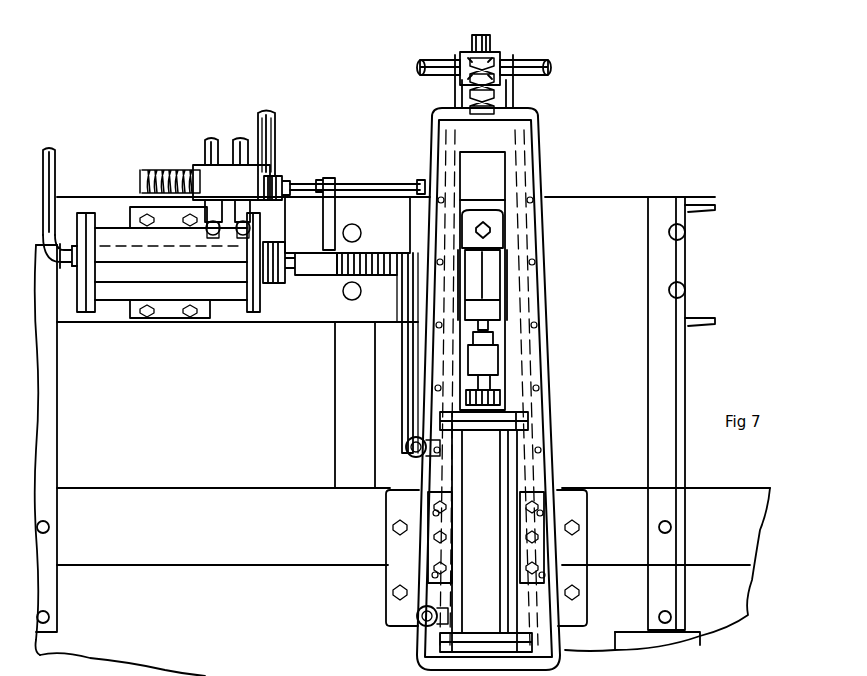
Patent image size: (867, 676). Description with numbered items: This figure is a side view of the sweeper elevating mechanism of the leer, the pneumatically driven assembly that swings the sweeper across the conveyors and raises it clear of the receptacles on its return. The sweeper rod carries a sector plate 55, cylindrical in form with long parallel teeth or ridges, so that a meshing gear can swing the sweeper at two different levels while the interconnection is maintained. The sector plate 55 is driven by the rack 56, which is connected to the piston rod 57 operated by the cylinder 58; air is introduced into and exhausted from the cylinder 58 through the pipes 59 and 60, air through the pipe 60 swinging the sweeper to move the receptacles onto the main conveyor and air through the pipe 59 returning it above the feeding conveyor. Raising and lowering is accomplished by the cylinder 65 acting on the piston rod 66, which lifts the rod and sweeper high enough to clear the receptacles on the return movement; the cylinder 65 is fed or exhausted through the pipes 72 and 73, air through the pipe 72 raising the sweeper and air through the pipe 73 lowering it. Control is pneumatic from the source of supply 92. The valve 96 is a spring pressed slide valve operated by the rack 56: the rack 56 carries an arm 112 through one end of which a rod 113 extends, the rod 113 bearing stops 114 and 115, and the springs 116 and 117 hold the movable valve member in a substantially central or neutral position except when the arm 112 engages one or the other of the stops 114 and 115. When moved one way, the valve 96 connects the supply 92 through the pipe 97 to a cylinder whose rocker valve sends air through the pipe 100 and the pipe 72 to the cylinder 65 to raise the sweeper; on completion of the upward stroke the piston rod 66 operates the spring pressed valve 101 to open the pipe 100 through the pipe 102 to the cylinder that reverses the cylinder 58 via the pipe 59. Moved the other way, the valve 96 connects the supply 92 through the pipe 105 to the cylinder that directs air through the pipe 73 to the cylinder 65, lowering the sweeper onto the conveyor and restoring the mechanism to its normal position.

The sector plate 55 is at (404, 388).
The rack 56 is at (376, 276).
The piston rod 57 is at (291, 282).
The cylinder 58 is at (223, 292).
The pipe 59 is at (51, 185).
The pipe 60 is at (273, 150).
The cylinder 65 is at (500, 492).
The piston rod 66 is at (494, 384).
The pipe 72 is at (418, 625).
The pipe 73 is at (408, 455).
The source of supply of air 92 is at (240, 226).
The valve 96 is at (240, 163).
The pipe 97 is at (210, 138).
The pipe 100 is at (434, 77).
The valve 101 is at (496, 66).
The pipe 102 is at (546, 76).
The pipe 105 is at (263, 112).
The arm 112 is at (335, 240).
The rod 113 is at (365, 183).
The stop 114 is at (329, 178).
The stop 115 is at (419, 182).
The spring 116 is at (170, 183).
The spring 117 is at (280, 180).